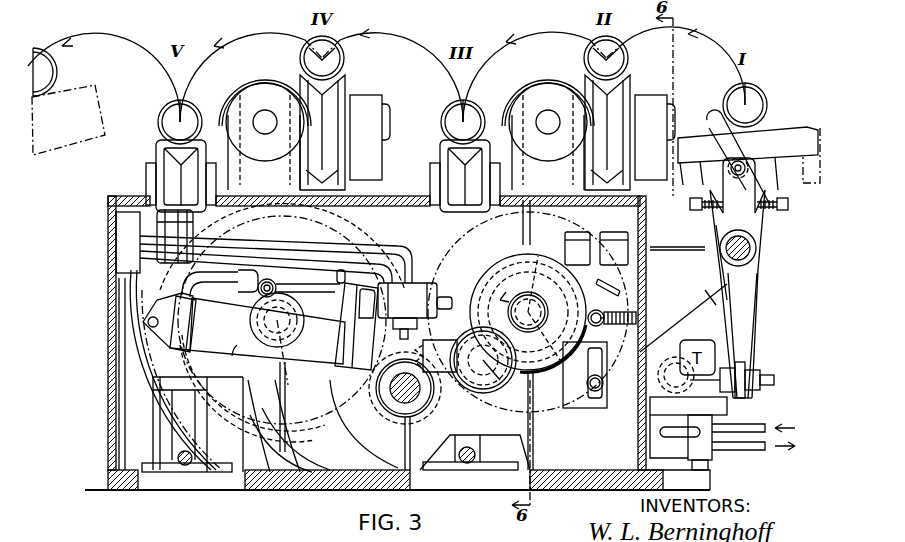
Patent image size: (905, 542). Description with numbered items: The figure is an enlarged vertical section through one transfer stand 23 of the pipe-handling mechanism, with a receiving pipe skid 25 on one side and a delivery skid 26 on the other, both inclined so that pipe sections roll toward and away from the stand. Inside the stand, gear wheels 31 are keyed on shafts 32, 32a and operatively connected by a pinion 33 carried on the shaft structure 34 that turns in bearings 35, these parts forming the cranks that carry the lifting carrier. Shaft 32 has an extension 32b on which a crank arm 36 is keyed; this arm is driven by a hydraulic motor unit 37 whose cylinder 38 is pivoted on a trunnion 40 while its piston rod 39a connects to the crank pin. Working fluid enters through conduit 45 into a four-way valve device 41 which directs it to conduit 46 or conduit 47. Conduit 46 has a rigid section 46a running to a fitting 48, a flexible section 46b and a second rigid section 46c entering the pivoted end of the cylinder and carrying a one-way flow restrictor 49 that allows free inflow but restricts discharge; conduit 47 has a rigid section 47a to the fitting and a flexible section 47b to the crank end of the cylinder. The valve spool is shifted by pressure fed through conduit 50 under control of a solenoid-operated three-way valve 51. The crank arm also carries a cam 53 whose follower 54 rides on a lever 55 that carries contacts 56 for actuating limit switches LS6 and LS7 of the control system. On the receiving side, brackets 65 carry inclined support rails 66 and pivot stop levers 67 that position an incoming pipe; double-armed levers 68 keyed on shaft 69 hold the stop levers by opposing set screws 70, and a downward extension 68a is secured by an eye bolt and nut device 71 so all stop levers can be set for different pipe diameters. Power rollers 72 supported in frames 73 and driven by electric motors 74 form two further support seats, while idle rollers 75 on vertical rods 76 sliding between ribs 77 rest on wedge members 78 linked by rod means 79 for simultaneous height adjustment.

The stand 23 is at (96, 197).
The pipe skid 25 is at (813, 192).
The delivery skid 26 is at (68, 88).
The gear wheel 31 is at (318, 470).
The shaft 32 is at (532, 294).
The shaft 32a is at (272, 352).
The shaft extension 32b is at (528, 312).
The pinion 33 is at (372, 470).
The shaft structure 34 is at (404, 396).
The bearings 35 is at (385, 420).
The crank arm 36 is at (533, 380).
The hydraulic motor unit 37 is at (239, 357).
The cylinder 38 is at (218, 342).
The piston rod 39a is at (436, 346).
The trunnion 40 is at (148, 322).
The four-way valve device 41 is at (437, 290).
The conduit 45 is at (356, 326).
The conduit 46 is at (332, 240).
The rigid conduit section 46a is at (265, 250).
The flexible conduit section 46b is at (265, 476).
The rigid conduit section 46c is at (251, 372).
The conduit 47 is at (358, 265).
The rigid conduit section 47a is at (300, 255).
The flexible conduit section 47b is at (295, 478).
The fitting 48 is at (120, 228).
The one-way flow restrictor 49 is at (240, 283).
The conduit 50 is at (340, 279).
The three-way valve 51 is at (706, 446).
The cam 53 is at (528, 310).
The follower 54 is at (640, 318).
The lever 55 is at (585, 375).
The contacts 56 is at (597, 292).
The bracket 65 is at (683, 318).
The inclined support rail 66 is at (786, 128).
The stop lever 67 is at (714, 116).
The double-armed lever 68 is at (762, 232).
The downward extension 68a is at (756, 298).
The shaft 69 is at (756, 262).
The set screws 70 is at (700, 210).
The eye bolt and nut device 71 is at (818, 348).
The power roller 72 is at (342, 92).
The frame 73 is at (368, 112).
The electric motor 74 is at (256, 94).
The idle roller 75 is at (165, 160).
The vertical rod 76 is at (170, 222).
The ribs 77 is at (525, 214).
The wedge member 78 is at (460, 470).
The rod means 79 is at (468, 464).
The limit switch LS6 is at (630, 250).
The limit switch LS7 is at (568, 250).